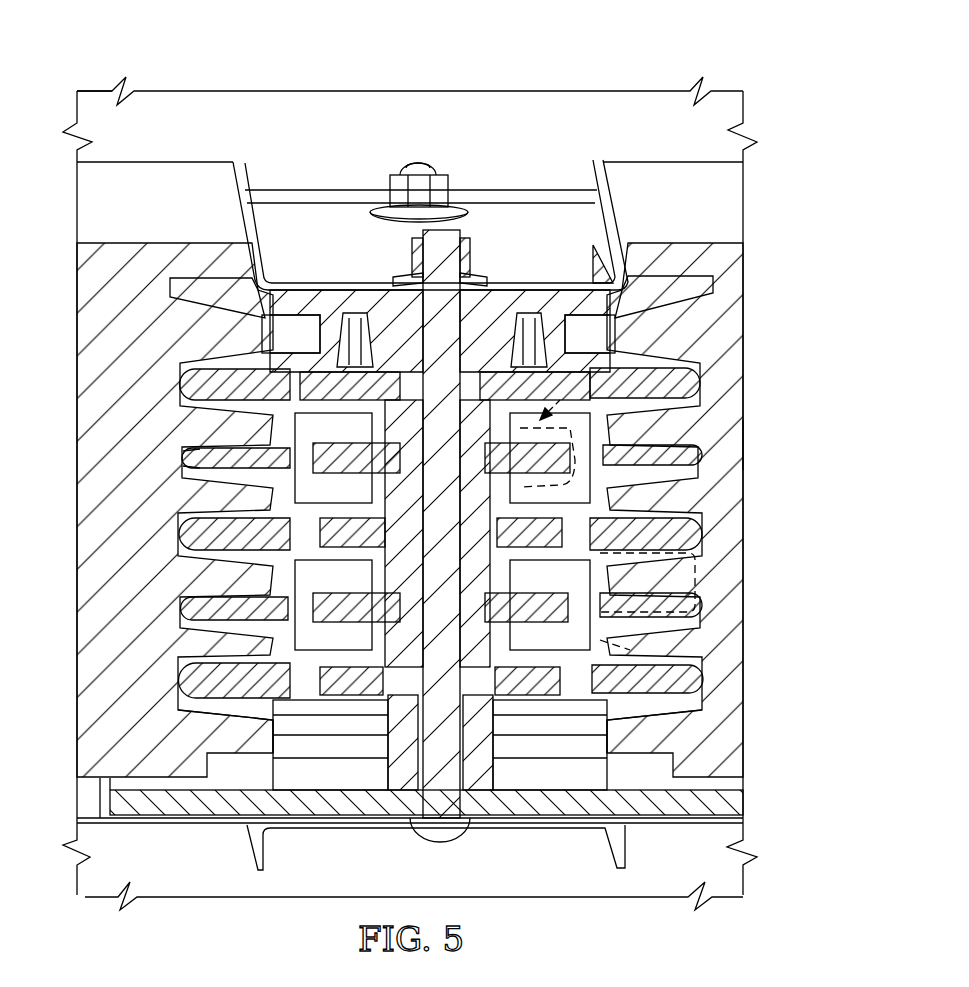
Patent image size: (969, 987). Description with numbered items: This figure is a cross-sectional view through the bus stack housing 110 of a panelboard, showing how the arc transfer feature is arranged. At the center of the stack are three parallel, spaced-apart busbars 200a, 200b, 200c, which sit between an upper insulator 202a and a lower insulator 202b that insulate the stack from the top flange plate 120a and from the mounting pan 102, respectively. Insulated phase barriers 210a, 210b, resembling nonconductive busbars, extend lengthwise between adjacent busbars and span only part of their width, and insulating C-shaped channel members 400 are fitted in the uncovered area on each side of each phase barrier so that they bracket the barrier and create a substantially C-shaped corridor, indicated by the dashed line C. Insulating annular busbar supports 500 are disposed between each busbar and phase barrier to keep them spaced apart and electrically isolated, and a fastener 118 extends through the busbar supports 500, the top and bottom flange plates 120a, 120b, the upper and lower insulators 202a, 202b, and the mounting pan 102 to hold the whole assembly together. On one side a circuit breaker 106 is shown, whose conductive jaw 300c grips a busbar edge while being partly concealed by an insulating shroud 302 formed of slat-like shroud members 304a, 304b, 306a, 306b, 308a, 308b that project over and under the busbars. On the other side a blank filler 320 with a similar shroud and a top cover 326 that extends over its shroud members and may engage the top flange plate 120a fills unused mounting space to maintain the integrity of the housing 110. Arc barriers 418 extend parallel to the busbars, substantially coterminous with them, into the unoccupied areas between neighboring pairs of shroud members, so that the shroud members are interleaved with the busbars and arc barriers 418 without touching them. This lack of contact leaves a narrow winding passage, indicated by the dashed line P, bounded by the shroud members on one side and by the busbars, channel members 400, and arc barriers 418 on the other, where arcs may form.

The housing 110 is at (640, 48).
The circuit breaker 106 is at (60, 415).
The mounting pan 102 is at (140, 825).
The fastener 118 is at (458, 232).
The top flange plate 120a is at (320, 212).
The bottom flange plate 120b is at (265, 848).
The busbar 200a is at (505, 320).
The busbar 200b is at (525, 525).
The busbar 200c is at (552, 700).
The upper insulator 202a is at (200, 290).
The lower insulator 202b is at (195, 808).
The phase barrier 210a is at (520, 445).
The phase barrier 210b is at (525, 602).
The conductive jaw 300c is at (190, 683).
The insulating shroud 302 is at (83, 500).
The shroud member 304a is at (265, 320).
The shroud member 304b is at (240, 410).
The shroud member 306a is at (240, 475).
The shroud member 306b is at (240, 558).
The shroud member 308a is at (240, 620).
The shroud member 308b is at (262, 708).
The blank filler 320 is at (760, 448).
The top cover 326 is at (83, 290).
The channel member 400 is at (325, 507).
The arc barrier 418 is at (185, 457).
The busbar support 500 is at (384, 436).
The C-shaped corridor C is at (578, 376).
The arc passage P is at (703, 613).